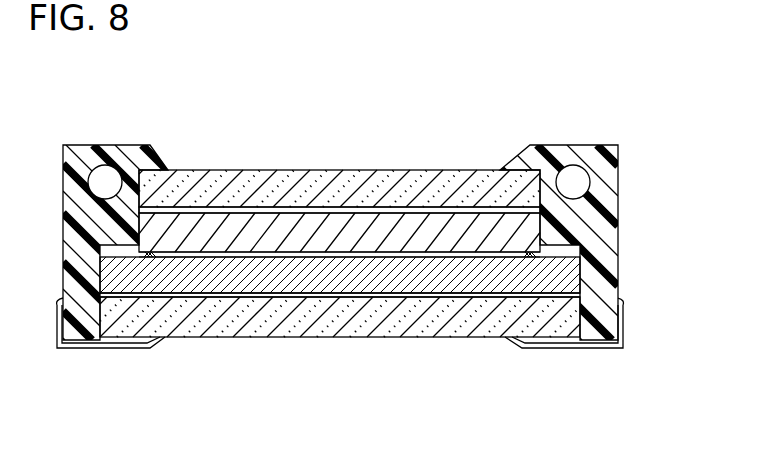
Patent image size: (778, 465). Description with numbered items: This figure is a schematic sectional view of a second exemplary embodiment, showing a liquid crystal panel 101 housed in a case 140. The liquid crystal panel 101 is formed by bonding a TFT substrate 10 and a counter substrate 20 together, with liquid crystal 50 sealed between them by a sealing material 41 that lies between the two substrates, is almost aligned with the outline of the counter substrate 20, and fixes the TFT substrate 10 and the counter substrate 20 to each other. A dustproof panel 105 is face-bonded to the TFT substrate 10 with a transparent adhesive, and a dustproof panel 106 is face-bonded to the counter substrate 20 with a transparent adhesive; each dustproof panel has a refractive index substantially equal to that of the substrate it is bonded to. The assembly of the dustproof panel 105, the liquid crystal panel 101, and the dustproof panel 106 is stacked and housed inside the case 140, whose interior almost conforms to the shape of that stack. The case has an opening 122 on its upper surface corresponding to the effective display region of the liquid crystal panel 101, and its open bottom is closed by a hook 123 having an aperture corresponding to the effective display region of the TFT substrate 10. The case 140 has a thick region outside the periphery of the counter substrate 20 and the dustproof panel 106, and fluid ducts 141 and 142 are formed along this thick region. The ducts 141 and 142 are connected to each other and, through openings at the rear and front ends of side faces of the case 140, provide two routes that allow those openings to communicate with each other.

The TFT substrate 10 is at (283, 287).
The counter substrate 20 is at (340, 210).
The sealing material 41 is at (545, 253).
The liquid crystal 50 is at (394, 248).
The liquid crystal panel 101 is at (360, 305).
The dustproof panel 105 is at (442, 338).
The dustproof panel 106 is at (466, 172).
The opening 122 is at (165, 160).
The hook 123 is at (90, 348).
The case 140 is at (578, 147).
The fluid duct 141 is at (105, 165).
The fluid duct 142 is at (608, 148).